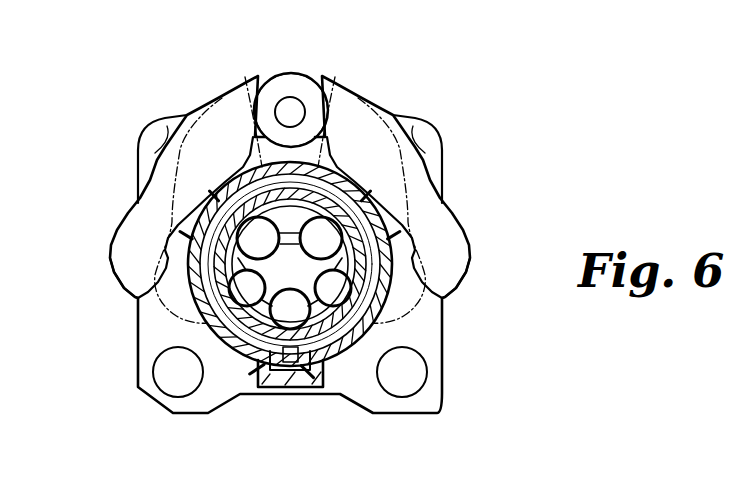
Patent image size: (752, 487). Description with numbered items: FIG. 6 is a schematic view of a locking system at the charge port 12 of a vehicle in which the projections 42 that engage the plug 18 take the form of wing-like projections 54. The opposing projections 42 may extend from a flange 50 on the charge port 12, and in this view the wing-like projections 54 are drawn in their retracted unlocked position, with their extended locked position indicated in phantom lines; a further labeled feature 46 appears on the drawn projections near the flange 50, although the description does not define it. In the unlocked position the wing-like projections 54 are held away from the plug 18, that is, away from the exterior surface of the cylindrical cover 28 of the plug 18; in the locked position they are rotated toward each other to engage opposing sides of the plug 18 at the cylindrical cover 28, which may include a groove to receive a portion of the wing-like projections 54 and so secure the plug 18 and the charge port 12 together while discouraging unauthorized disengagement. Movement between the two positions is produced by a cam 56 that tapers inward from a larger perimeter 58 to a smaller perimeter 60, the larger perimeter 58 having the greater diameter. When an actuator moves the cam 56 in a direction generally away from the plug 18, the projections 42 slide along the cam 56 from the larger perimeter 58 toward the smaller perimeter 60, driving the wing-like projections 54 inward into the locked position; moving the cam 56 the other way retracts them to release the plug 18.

The charge port 12 is at (442, 157).
The plug 18 is at (303, 375).
The cylindrical cover 28 is at (357, 313).
The projection 42 is at (108, 234).
The inner edge of latch arm 46 is at (137, 302).
The flange 50 is at (293, 386).
The wing-like projection 54 is at (112, 263).
The cam 56 is at (292, 62).
The larger perimeter 58 is at (302, 73).
The smaller perimeter 60 is at (305, 102).